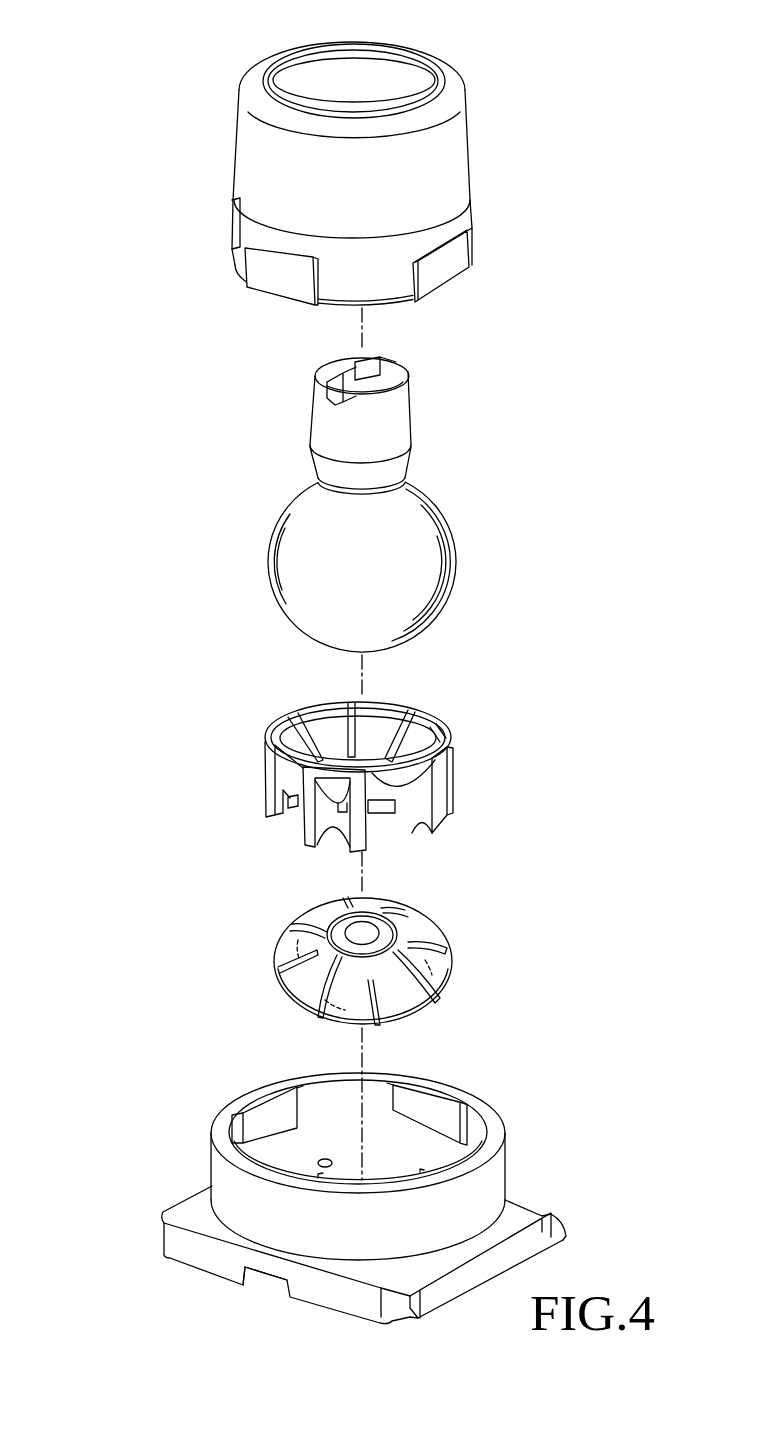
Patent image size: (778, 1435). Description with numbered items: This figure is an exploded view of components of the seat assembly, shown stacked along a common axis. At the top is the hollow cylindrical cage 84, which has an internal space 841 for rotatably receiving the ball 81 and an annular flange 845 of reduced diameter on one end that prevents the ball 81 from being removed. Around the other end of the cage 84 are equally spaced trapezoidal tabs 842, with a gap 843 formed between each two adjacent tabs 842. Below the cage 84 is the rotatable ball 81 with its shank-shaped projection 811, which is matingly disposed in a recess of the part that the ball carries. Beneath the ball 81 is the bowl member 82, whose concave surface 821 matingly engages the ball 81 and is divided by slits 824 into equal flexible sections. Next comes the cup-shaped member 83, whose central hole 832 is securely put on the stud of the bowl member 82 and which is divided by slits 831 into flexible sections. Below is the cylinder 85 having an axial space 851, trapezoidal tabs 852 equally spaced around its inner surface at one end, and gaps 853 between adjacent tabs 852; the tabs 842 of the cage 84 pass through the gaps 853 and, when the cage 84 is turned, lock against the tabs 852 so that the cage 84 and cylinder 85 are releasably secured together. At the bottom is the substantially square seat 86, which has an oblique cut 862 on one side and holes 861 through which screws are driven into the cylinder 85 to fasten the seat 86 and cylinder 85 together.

The hollow cylindrical cage 84 is at (380, 208).
The internal space 841 is at (411, 77).
The annular flange 845 is at (306, 82).
The trapezoidal tabs 842 is at (460, 267).
The gaps 843 is at (391, 307).
The rotatable ball 81 is at (307, 504).
The shank-shaped projection 811 is at (327, 432).
The bowl member 82 is at (422, 744).
The concave surface 821 is at (419, 732).
The slits 824 is at (350, 712).
The cup-shaped member 83 is at (403, 939).
The slits 831 is at (437, 947).
The central hole 832 is at (372, 923).
The cylinder 85 is at (407, 1139).
The axial space 851 is at (313, 1128).
The trapezoidal tabs 852 is at (443, 1097).
The gaps 853 is at (387, 1100).
The seat 86 is at (308, 1222).
The holes 861 is at (321, 1160).
The oblique cut 862 is at (270, 1282).